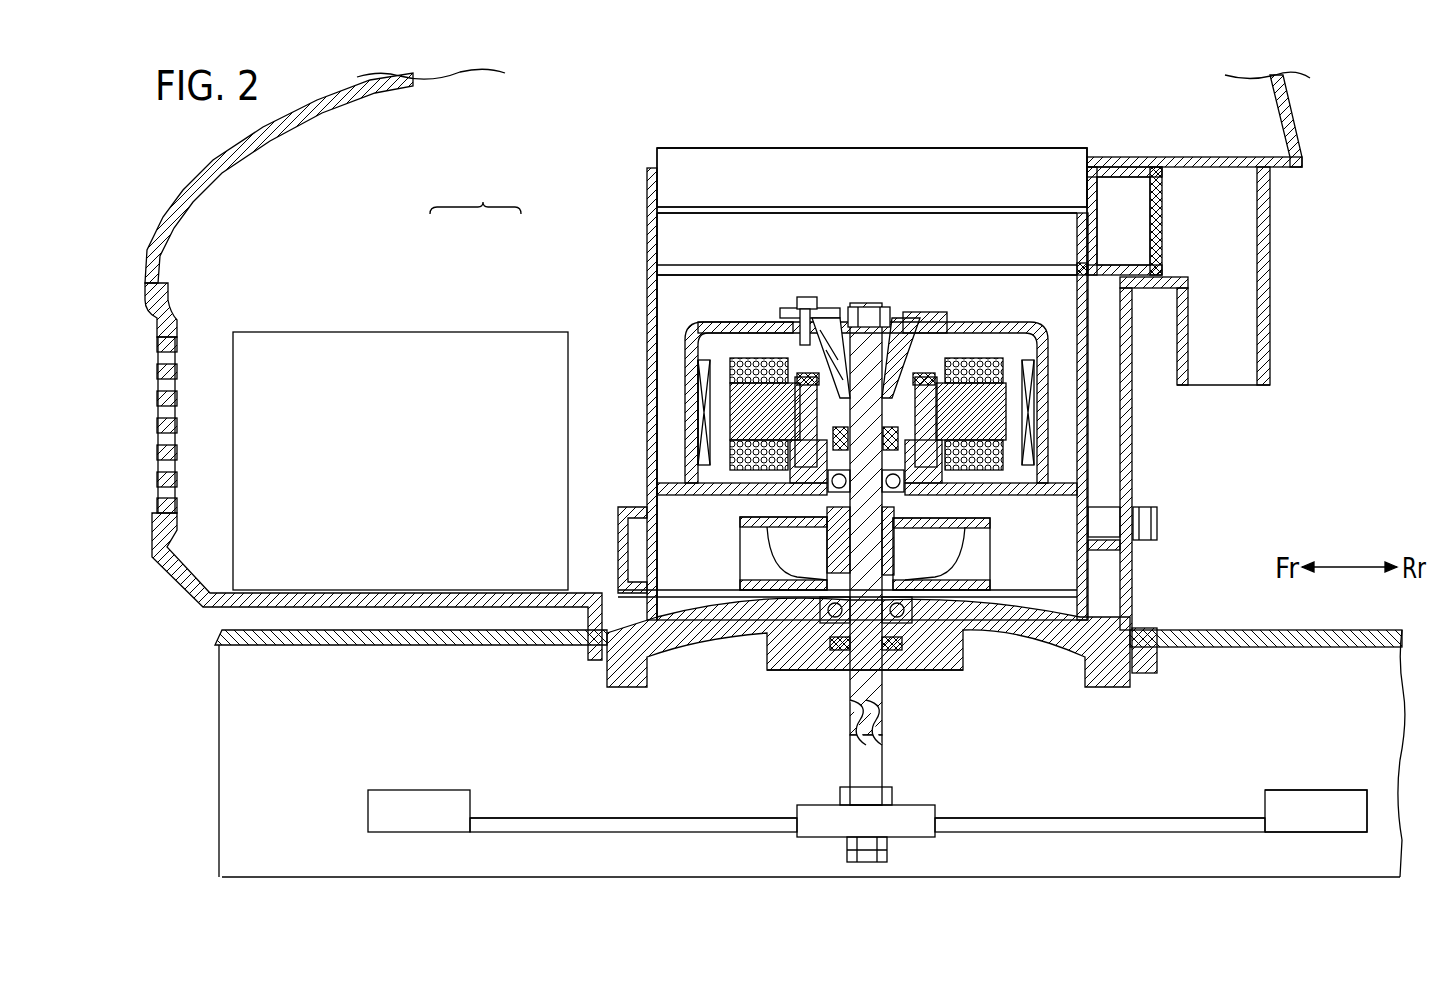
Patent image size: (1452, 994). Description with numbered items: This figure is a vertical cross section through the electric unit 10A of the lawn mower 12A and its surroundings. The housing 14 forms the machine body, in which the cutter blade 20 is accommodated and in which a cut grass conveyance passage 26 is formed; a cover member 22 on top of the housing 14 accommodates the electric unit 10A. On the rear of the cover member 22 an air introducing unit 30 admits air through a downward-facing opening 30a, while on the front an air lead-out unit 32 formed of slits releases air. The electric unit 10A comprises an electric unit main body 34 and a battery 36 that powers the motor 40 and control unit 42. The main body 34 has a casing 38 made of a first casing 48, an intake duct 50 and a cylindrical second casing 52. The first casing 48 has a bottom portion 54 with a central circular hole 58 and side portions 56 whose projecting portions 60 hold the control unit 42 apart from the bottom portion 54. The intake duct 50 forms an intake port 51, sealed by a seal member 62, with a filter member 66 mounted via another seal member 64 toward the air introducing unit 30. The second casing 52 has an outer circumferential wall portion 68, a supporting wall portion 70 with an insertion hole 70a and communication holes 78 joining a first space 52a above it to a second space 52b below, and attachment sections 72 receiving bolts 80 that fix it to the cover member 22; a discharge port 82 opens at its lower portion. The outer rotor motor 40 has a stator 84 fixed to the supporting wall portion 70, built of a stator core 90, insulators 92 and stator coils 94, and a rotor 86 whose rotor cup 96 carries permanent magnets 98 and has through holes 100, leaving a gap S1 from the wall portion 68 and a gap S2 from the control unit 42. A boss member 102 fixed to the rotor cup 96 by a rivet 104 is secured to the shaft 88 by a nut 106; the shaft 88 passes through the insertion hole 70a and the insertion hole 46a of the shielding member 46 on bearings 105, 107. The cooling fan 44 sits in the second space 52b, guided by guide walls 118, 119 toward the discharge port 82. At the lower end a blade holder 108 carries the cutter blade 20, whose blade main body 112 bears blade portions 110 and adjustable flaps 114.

The electric unit 10A is at (475, 193).
The lawn mower 12A is at (238, 144).
The housing 14 is at (1240, 630).
The cutter blade 20 is at (512, 846).
The cover member 22 is at (215, 197).
The cut grass conveyance passage 26 is at (1315, 672).
The air introducing unit 30 is at (1270, 285).
The opening 30a is at (1240, 387).
The air lead-out unit 32 is at (178, 410).
The electric unit main body 34 is at (621, 236).
The battery 36 is at (442, 318).
The casing 38 is at (621, 160).
The motor 40 is at (1029, 314).
The control unit 42 is at (980, 162).
The cooling fan 44 is at (975, 583).
The shielding member 46 is at (1060, 635).
The insertion hole 46a is at (880, 680).
The first casing 48 is at (634, 267).
The intake duct 50 is at (1120, 156).
The intake port 51 is at (1105, 200).
The second casing 52 is at (634, 298).
The first space 52a is at (660, 310).
The second space 52b is at (1090, 580).
The bottom portion 54 is at (1083, 270).
The side portions 56 is at (648, 184).
The circular hole 58 is at (710, 275).
The projecting portions 60 is at (858, 210).
The seal member 62 is at (1090, 176).
The seal member 64 is at (1155, 175).
The filter member 66 is at (1162, 215).
The outer circumferential wall portion 68 is at (700, 392).
The supporting wall portion 70 is at (688, 496).
The insertion hole 70a is at (1010, 455).
The attachment sections 72 is at (1158, 514).
The communication holes 78 is at (730, 496).
The bolts 80 is at (1150, 530).
The discharge port 82 is at (628, 548).
The stator 84 is at (997, 340).
The rotor 86 is at (939, 303).
The shaft 88 is at (852, 735).
The stator core 90 is at (1010, 405).
The insulators 92 is at (1012, 438).
The stator coils 94 is at (1030, 372).
The rotor cup 96 is at (700, 368).
The permanent magnets 98 is at (700, 445).
The through holes 100 is at (745, 325).
The boss member 102 is at (830, 308).
The rivet 104 is at (803, 297).
The bearing 105 is at (912, 503).
The nut 106 is at (880, 305).
The bearing 107 is at (835, 618).
The blade holder 108 is at (920, 808).
The blade portions 110 is at (1300, 833).
The blade main body 112 is at (708, 832).
The flaps 114 is at (438, 800).
The guide wall 118 is at (1090, 606).
The guide wall 119 is at (1092, 560).
The gap S1 is at (672, 420).
The gap S2 is at (688, 225).